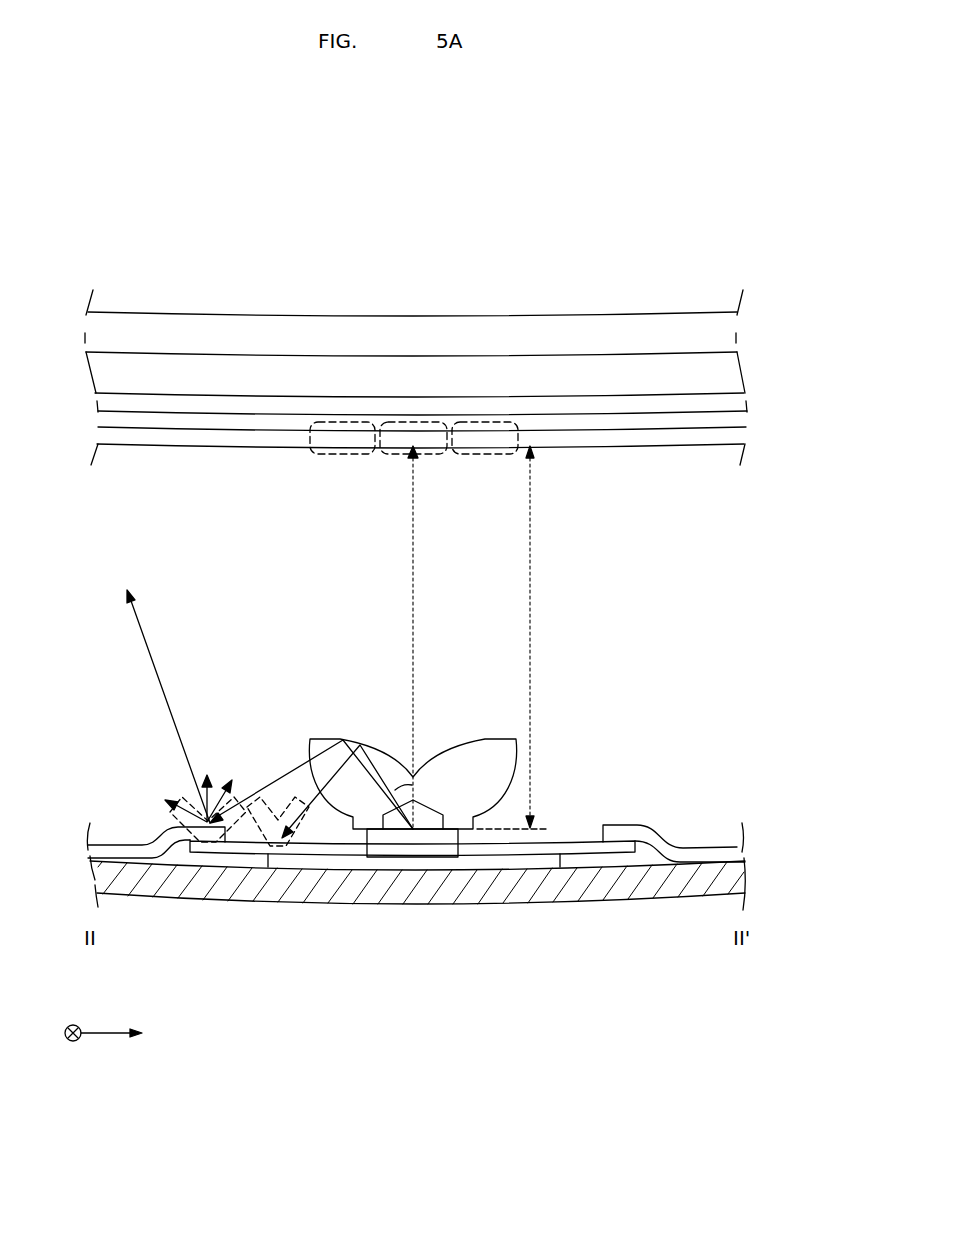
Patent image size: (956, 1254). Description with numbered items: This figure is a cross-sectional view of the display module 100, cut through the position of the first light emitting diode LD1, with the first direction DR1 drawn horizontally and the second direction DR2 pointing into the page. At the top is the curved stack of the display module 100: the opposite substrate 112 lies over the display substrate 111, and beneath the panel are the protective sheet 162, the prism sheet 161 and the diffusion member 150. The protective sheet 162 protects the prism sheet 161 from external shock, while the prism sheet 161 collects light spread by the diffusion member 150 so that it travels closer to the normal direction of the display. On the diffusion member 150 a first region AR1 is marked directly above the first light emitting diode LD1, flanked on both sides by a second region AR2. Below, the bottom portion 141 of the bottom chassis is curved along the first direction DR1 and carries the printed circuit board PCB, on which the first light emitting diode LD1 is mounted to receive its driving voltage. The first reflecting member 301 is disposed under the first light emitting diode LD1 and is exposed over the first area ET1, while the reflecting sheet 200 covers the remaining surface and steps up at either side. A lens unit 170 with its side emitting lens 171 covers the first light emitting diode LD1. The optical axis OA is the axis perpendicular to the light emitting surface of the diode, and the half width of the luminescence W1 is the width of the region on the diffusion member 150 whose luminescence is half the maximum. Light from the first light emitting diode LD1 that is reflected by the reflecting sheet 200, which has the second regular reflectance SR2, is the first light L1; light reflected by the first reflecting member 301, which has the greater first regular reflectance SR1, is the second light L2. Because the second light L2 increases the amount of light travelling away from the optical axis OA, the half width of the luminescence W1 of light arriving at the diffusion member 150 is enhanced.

The display module 100 is at (458, 335).
The opposite substrate 112 is at (727, 333).
The display substrate 111 is at (735, 372).
The protective sheet 162 is at (745, 396).
The prism sheet 161 is at (748, 414).
The diffusion member 150 is at (746, 436).
The first region AR1 is at (388, 456).
The second region AR2 is at (330, 456).
The optical axis OA is at (401, 637).
The half width of the luminescence W1 is at (522, 637).
The lens unit 170 is at (414, 740).
The lens 171 is at (463, 755).
The first light L1 is at (292, 770).
The second light L2 is at (155, 632).
The first regular reflectance SR1 is at (273, 802).
The second regular reflectance SR2 is at (192, 800).
The first area ET1 is at (576, 830).
The reflecting sheet 200 is at (699, 847).
The bottom portion 141 is at (227, 887).
The printed circuit board PCB is at (327, 867).
The first light emitting diode LD1 is at (415, 843).
The first reflecting member 301 is at (507, 852).
The first direction DR1 is at (135, 1033).
The second direction DR2 is at (73, 1043).